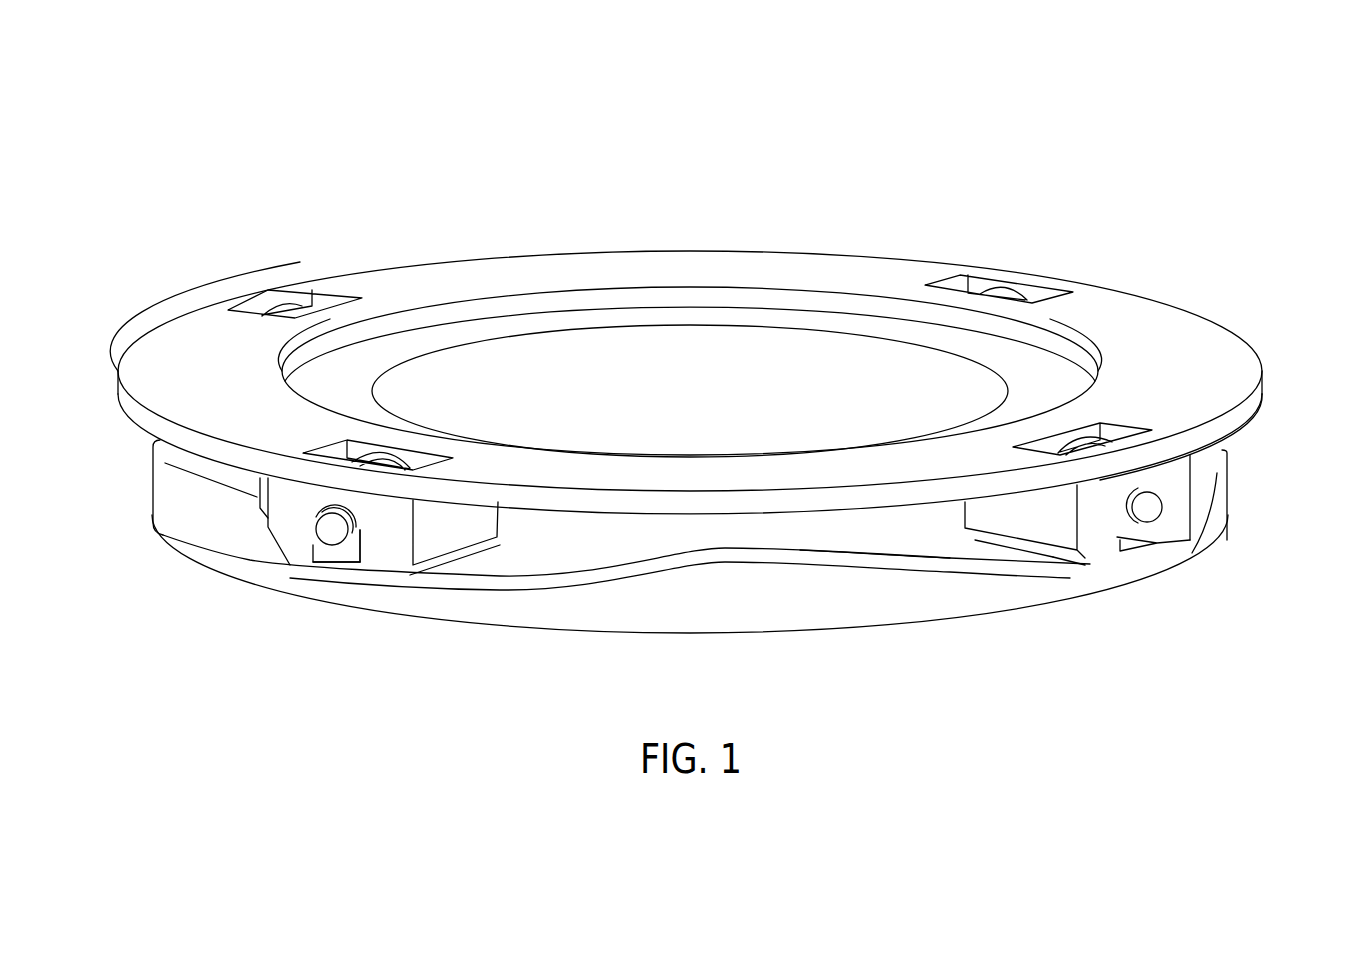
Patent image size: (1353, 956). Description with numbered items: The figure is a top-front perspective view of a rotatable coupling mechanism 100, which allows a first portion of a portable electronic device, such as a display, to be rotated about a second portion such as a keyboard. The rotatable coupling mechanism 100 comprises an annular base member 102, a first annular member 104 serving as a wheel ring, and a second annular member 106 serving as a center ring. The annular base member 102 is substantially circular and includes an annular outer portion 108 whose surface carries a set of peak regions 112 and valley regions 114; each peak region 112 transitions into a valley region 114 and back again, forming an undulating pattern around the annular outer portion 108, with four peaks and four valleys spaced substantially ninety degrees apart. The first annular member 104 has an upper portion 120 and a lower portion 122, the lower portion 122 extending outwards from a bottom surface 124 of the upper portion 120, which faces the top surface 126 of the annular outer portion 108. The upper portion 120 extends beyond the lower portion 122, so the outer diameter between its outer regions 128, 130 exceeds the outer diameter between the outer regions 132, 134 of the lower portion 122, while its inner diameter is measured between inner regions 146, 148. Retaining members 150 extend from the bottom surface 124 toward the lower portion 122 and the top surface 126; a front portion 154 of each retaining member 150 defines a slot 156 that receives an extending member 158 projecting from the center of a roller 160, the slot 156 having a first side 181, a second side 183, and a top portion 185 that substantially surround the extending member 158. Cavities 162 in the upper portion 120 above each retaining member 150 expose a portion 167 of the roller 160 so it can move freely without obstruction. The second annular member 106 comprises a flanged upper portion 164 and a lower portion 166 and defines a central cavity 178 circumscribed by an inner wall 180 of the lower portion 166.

The rotatable coupling mechanism 100 is at (915, 175).
The annular base member 102 is at (1232, 520).
The first annular member 104 is at (473, 575).
The second annular member 106 is at (878, 320).
The annular outer portion 108 is at (165, 525).
The peak region 112 is at (750, 563).
The valley region 114 is at (337, 570).
The upper portion 120 is at (200, 318).
The lower portion 122 is at (530, 560).
The bottom surface 124 is at (1248, 422).
The top surface 126 is at (205, 487).
The outer region 128 is at (115, 380).
The outer region 130 is at (1265, 380).
The outer region 132 is at (257, 498).
The outer region 134 is at (1193, 473).
The inner region 146 is at (280, 365).
The inner region 148 is at (1100, 370).
The retaining member 150 is at (1048, 526).
The front portion 154 is at (1100, 537).
The slot 156 is at (1162, 523).
The extending member 158 is at (320, 533).
The roller 160 is at (1090, 565).
The cavity 162 is at (415, 445).
The upper portion 164 is at (568, 312).
The lower portion 166 is at (888, 545).
The portion of the roller 167 is at (290, 307).
The cavity 178 is at (690, 345).
The inner wall 180 is at (768, 338).
The first side 181 is at (300, 530).
The second side 183 is at (372, 537).
The top portion 185 is at (313, 494).